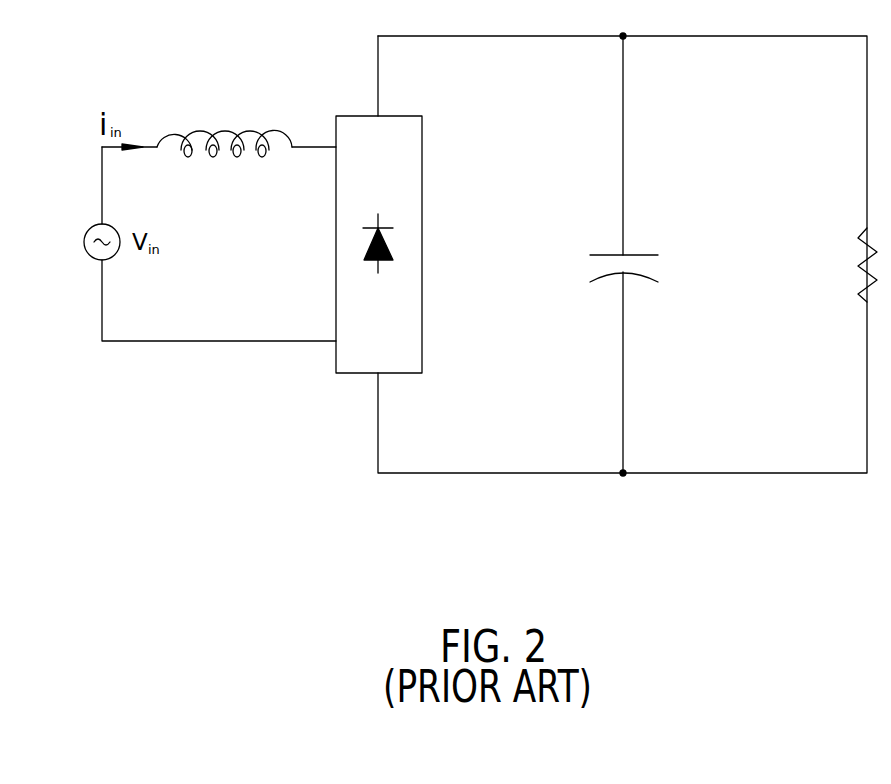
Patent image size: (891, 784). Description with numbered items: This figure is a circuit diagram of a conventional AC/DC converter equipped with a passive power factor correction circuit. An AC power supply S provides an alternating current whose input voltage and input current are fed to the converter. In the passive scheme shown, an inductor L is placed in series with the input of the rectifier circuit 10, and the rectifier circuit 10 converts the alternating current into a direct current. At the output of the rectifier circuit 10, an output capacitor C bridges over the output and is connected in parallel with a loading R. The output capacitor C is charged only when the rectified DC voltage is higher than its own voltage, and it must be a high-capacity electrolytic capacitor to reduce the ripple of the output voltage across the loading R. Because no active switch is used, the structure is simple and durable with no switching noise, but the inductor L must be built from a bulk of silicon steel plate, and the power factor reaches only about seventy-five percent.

The rectifier circuit 10 is at (336, 360).
The AC power supply S is at (87, 255).
The inductor L is at (224, 127).
The output capacitor C is at (607, 254).
The loading R is at (843, 265).